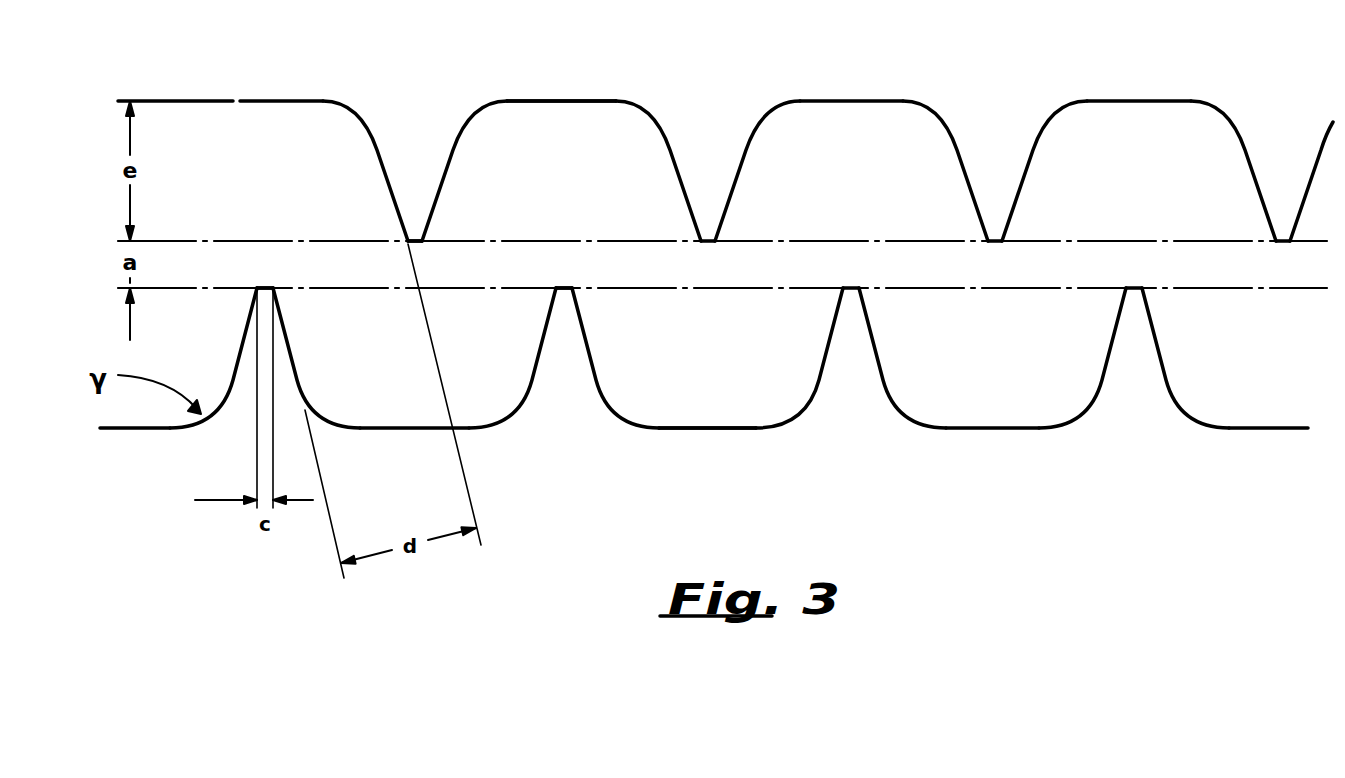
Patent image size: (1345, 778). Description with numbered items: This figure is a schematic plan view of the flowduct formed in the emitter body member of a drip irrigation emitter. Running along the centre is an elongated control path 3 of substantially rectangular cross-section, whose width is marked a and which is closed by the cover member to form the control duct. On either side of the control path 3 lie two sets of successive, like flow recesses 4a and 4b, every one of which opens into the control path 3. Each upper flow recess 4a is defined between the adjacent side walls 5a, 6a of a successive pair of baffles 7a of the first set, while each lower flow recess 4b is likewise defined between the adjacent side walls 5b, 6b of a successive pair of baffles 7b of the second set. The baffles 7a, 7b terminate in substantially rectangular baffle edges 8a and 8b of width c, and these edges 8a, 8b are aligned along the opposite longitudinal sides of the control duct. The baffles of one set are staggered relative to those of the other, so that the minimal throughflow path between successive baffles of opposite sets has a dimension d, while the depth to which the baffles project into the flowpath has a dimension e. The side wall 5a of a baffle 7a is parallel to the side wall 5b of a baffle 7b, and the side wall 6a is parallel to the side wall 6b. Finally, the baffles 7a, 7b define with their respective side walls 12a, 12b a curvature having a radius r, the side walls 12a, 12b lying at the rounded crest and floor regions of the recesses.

The control path 3 is at (739, 276).
The flow recesses 4a is at (549, 171).
The baffles 7a is at (400, 171).
The baffle side wall 5a is at (436, 201).
The baffle side wall 6a is at (689, 201).
The baffle edges 8a is at (422, 243).
The side walls 12a is at (586, 101).
The flow recesses 4b is at (692, 399).
The baffles 7b is at (544, 399).
The baffle side wall 5b is at (831, 330).
The baffle side wall 6b is at (584, 330).
The baffle edges 8b is at (262, 287).
The side walls 12b is at (694, 428).